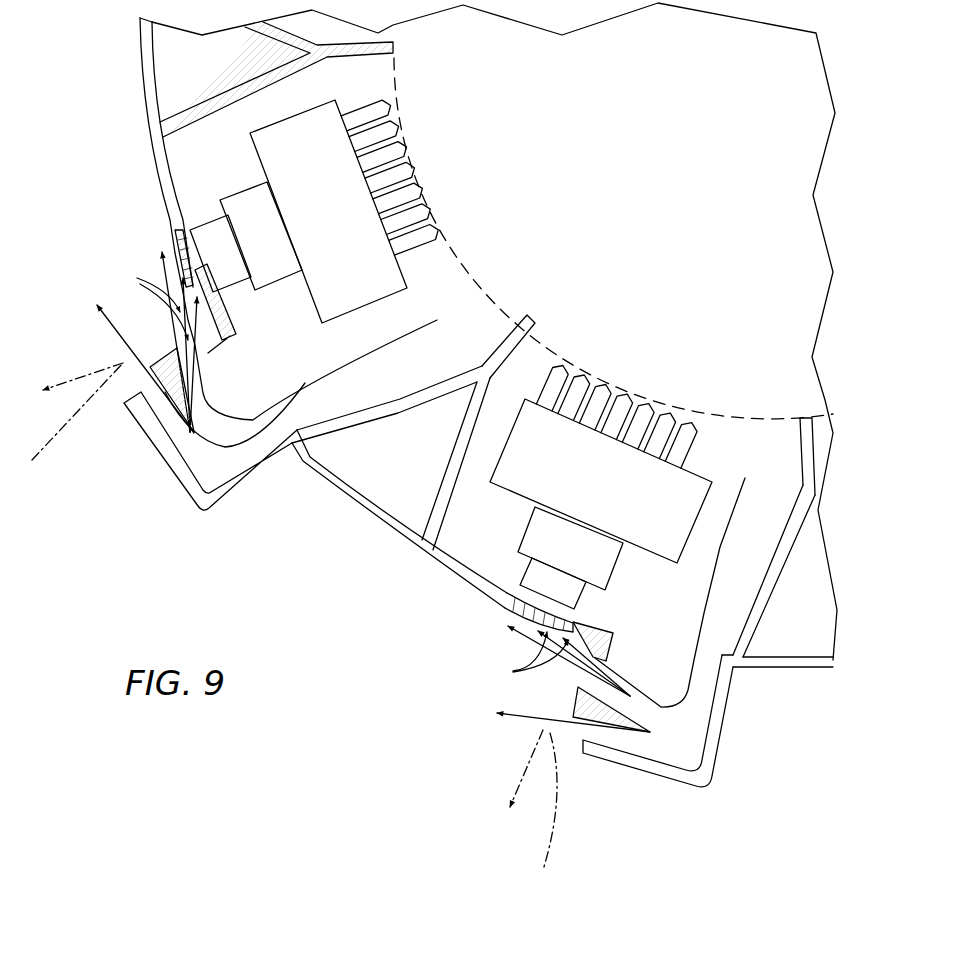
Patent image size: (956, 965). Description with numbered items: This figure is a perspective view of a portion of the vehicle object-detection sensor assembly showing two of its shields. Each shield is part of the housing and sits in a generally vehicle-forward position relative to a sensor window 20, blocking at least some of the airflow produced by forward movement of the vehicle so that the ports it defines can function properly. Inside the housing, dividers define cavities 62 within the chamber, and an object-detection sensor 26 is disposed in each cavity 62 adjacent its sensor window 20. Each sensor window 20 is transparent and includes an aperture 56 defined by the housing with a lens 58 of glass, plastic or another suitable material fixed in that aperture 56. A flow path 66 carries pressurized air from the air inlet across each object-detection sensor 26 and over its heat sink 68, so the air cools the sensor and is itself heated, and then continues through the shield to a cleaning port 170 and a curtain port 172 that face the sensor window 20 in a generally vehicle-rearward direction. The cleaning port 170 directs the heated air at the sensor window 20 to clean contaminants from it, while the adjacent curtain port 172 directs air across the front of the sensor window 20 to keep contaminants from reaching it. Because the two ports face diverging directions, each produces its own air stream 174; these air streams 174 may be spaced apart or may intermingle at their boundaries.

The sensor window 20 is at (173, 228).
The object-detection sensor 26 is at (227, 168).
The aperture 56 is at (193, 263).
The lens 58 is at (175, 243).
The cavity 62 is at (268, 425).
The flow path 66 is at (330, 367).
The heat sink 68 is at (410, 261).
The cleaning port 170 is at (165, 330).
The curtain port 172 is at (128, 356).
The air stream 174 is at (493, 752).